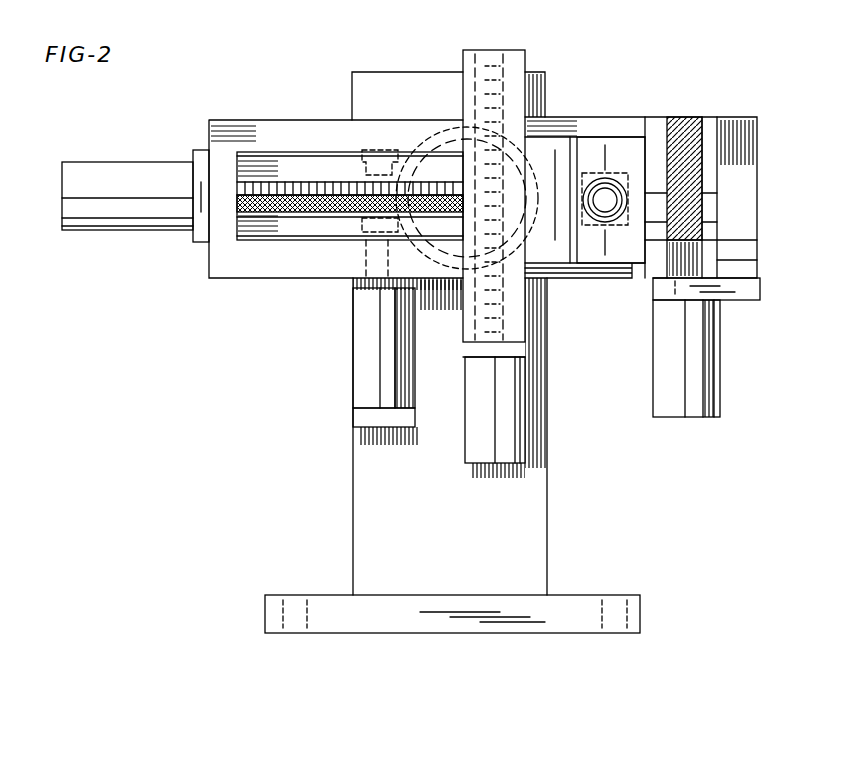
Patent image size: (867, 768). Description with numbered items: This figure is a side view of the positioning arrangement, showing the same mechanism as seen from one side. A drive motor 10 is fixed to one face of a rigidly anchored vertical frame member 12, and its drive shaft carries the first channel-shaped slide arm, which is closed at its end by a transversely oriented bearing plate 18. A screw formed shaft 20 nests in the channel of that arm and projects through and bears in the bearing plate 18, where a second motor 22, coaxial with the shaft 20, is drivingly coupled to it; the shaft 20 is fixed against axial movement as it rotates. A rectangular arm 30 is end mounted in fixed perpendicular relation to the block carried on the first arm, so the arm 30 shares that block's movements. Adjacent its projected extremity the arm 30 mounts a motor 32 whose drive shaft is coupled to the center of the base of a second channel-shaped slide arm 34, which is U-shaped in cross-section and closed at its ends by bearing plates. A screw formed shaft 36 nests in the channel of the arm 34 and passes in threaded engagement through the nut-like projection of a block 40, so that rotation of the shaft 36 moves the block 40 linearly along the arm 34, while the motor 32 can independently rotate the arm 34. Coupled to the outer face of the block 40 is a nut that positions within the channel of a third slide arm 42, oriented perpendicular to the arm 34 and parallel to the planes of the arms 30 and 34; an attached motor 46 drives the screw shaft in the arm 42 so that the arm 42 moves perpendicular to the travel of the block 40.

The drive motor 10 is at (440, 252).
The vertical frame member 12 is at (425, 63).
The bearing plate 18 is at (228, 258).
The screw formed shaft 20 is at (283, 178).
The second motor 22 is at (114, 194).
The rectangular arm 30 is at (750, 194).
The motor 32 is at (688, 117).
The slide arm 34 is at (603, 258).
The screw formed shaft 36 is at (628, 170).
The block 40 is at (560, 160).
The slide arm 42 is at (493, 44).
The motor 46 is at (478, 421).